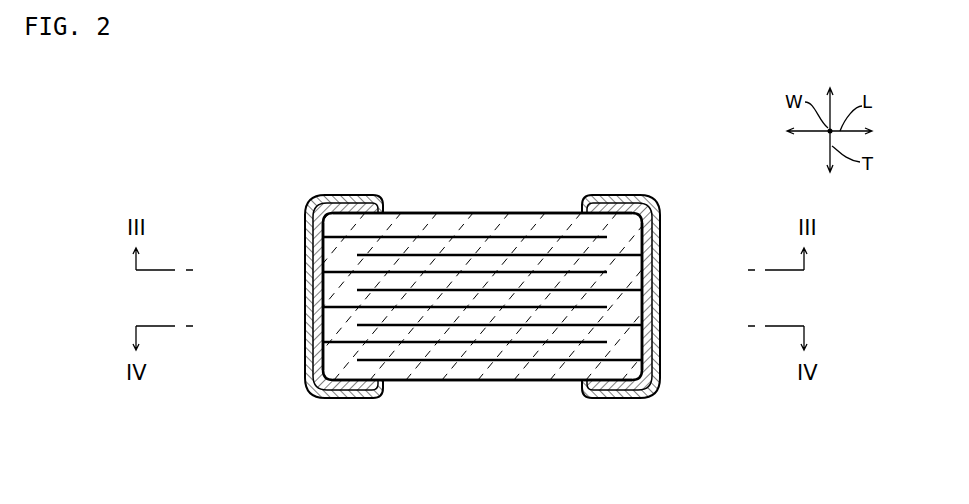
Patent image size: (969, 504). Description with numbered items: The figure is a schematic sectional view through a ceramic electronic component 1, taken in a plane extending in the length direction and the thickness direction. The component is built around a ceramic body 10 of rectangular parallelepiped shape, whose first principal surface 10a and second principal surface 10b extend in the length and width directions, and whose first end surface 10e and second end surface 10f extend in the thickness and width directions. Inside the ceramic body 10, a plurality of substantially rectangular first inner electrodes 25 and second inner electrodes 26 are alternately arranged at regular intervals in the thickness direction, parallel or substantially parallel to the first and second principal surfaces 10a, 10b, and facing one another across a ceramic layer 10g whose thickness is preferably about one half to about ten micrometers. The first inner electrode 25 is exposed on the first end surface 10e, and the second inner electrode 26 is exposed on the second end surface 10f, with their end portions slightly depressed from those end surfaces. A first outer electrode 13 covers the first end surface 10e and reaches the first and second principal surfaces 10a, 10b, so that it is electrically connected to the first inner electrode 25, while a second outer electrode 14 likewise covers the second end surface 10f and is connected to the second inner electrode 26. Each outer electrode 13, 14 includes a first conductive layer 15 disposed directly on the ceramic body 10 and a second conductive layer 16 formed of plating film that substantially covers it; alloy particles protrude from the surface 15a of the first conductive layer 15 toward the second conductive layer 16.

The ceramic electronic component 1 is at (650, 145).
The ceramic body 10 is at (560, 205).
The first principal surface 10a is at (469, 212).
The second principal surface 10b is at (484, 381).
The first end surface 10e is at (321, 297).
The second end surface 10f is at (646, 302).
The ceramic layer 10g is at (557, 350).
The first outer electrode 13 is at (297, 271).
The second outer electrode 14 is at (667, 349).
The first conductive layer 15 is at (302, 333).
The surface of the first conductive layer 15a is at (305, 232).
The second conductive layer 16 is at (305, 368).
The first inner electrode 25 is at (403, 348).
The second inner electrode 26 is at (433, 362).